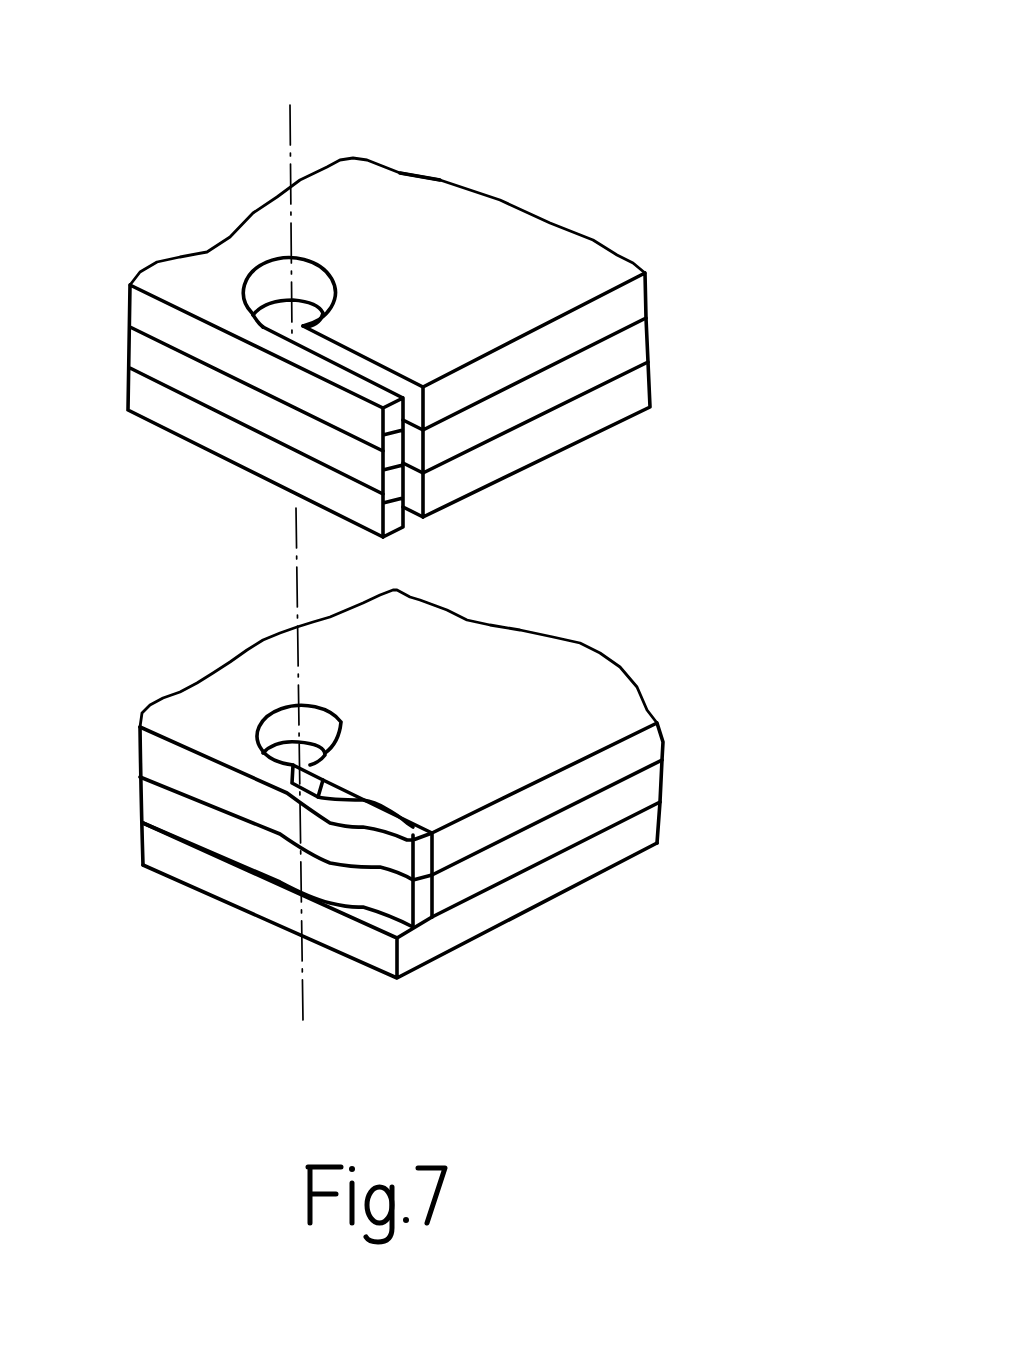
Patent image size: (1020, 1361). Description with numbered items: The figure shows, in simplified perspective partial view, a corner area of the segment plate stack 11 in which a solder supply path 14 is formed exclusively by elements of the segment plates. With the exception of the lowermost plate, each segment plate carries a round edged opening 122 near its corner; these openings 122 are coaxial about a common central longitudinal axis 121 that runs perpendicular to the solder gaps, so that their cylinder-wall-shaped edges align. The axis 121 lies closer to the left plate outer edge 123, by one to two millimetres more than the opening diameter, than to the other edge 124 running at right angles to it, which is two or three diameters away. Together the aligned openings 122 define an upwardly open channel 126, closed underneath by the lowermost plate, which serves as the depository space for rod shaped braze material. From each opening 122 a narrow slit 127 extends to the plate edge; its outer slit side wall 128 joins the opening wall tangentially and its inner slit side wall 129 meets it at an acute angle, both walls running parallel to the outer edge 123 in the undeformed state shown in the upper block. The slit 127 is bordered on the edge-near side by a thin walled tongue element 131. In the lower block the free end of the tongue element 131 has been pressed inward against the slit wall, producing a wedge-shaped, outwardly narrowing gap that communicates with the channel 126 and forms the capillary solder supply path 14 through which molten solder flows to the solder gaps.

The segment plate stack 11 is at (426, 962).
The solder supply path 14 is at (319, 786).
The central longitudinal axis 121 is at (293, 548).
The opening 122 is at (303, 255).
The plate outer edge 123 is at (197, 313).
The top surface 124 is at (597, 300).
The channel 126 is at (277, 317).
The slit 127 is at (342, 365).
The outer slit side wall 128 is at (325, 360).
The inner slit side wall 129 is at (396, 376).
The tongue element 131 is at (405, 525).